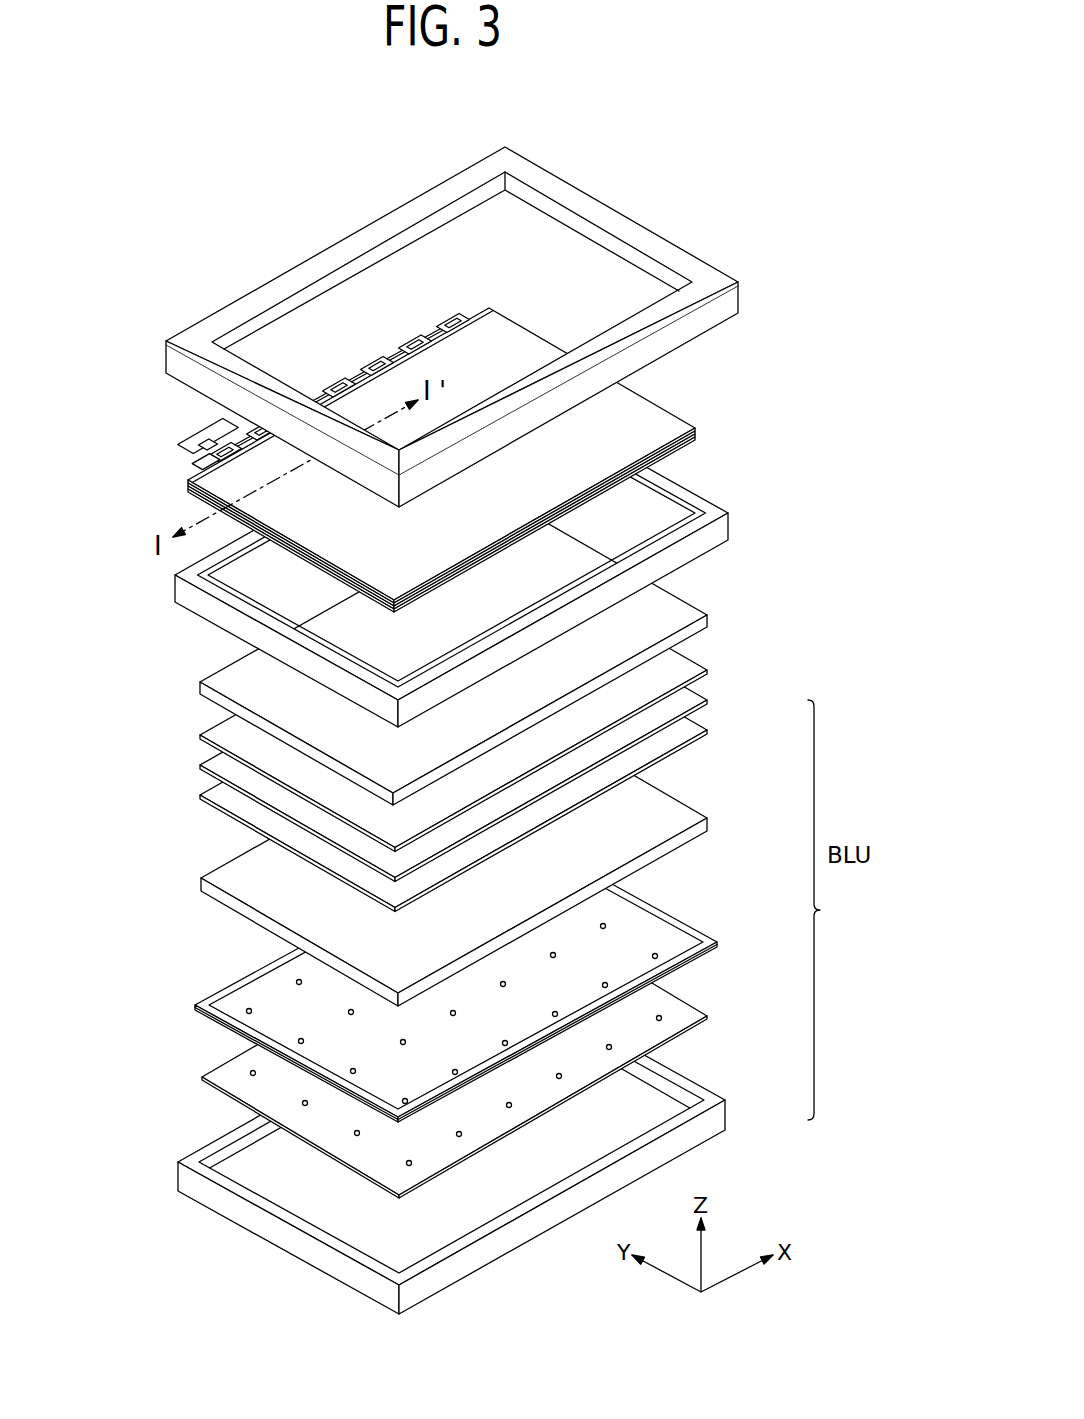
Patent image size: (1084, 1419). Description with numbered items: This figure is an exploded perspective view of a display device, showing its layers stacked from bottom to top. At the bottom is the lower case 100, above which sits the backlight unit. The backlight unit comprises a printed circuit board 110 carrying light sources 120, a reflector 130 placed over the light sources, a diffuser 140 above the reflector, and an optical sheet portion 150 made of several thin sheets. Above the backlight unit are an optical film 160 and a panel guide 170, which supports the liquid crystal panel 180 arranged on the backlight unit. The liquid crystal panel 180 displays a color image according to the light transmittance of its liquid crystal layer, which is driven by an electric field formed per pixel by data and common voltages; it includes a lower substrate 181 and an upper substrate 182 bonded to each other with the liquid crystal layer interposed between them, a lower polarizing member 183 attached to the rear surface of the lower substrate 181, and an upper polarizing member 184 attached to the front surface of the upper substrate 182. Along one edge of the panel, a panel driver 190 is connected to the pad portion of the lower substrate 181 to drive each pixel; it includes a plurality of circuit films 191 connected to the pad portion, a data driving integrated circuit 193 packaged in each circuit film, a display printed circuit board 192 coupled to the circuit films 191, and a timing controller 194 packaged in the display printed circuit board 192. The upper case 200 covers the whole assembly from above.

The lower case 100 is at (720, 1113).
The printed circuit board 110 is at (661, 1020).
The light sources 120 is at (693, 1013).
The reflector 130 is at (717, 943).
The diffuser 140 is at (703, 826).
The optical sheet portion 150 is at (713, 668).
The optical film 160 is at (703, 622).
The panel guide 170 is at (712, 528).
The liquid crystal panel 180 is at (515, 460).
The lower substrate 181 is at (693, 438).
The upper substrate 182 is at (695, 430).
The lower polarizing member 183 is at (673, 455).
The upper polarizing member 184 is at (663, 425).
The panel driver 190 is at (258, 408).
The circuit films 191 is at (190, 470).
The display printed circuit board 192 is at (232, 427).
The data driving integrated circuit 193 is at (203, 463).
The timing controller 194 is at (208, 442).
The upper case 200 is at (296, 282).